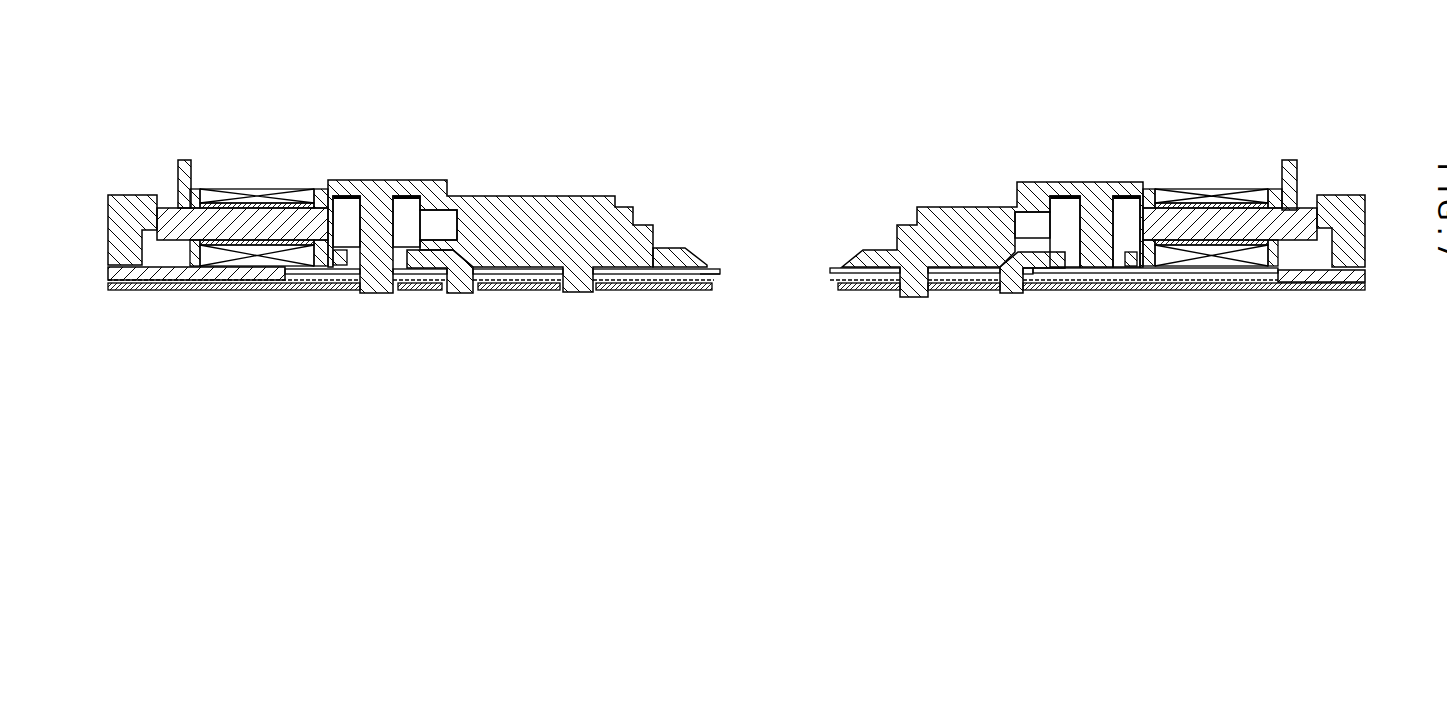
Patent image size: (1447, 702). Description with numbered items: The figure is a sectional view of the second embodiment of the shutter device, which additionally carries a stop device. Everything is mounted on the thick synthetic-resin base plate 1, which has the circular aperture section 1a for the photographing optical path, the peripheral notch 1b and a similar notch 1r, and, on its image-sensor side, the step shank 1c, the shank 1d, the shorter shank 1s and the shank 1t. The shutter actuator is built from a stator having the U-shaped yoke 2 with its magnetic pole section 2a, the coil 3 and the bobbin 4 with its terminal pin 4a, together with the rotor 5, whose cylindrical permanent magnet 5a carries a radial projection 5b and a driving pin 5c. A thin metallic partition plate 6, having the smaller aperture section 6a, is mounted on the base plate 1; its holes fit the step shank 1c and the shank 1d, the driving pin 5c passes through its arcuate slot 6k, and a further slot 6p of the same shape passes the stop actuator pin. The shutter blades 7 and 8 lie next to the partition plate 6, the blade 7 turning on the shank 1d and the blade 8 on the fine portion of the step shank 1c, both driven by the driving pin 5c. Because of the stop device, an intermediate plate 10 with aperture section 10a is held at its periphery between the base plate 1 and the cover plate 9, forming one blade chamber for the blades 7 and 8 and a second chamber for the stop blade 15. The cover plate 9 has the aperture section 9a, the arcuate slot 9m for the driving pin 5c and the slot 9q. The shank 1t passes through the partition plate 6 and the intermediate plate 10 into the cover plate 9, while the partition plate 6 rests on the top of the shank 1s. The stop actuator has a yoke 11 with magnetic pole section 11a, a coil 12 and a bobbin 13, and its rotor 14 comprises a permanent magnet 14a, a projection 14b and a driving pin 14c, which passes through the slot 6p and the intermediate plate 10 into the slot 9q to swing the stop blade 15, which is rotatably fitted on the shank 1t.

The base plate 1 is at (517, 207).
The aperture section 1a is at (843, 265).
The notch 1b is at (167, 198).
The step shank 1c is at (382, 262).
The shank 1d is at (578, 272).
The notch 1r is at (1303, 203).
The shank 1s is at (1093, 258).
The shank 1t is at (913, 282).
The yoke 2 is at (175, 228).
The magnetic pole section 2a is at (436, 220).
The coil 3 is at (251, 189).
The bobbin 4 is at (193, 250).
The terminal pin 4a is at (185, 160).
The rotor 5 is at (408, 193).
The permanent magnet 5a is at (348, 212).
The projection 5b is at (420, 281).
The driving pin 5c is at (456, 293).
The partition plate 6 is at (712, 265).
The aperture section 6a is at (720, 269).
The arcuate slot 6k is at (472, 262).
The slot 6p is at (995, 266).
The shutter blade 7 is at (645, 270).
The shutter blade 8 is at (667, 281).
The cover plate 9 is at (121, 291).
The aperture section 9a is at (712, 291).
The arcuate slot 9m is at (360, 294).
The slot 9q is at (993, 293).
The intermediate plate 10 is at (721, 274).
The aperture section 10a is at (824, 293).
The yoke 11 is at (1300, 268).
The magnetic pole section 11a is at (1030, 227).
The coil 12 is at (1210, 193).
The bobbin 13 is at (1283, 257).
The rotor 14 is at (1126, 208).
The permanent magnet 14a is at (1065, 212).
The projection 14b is at (1037, 263).
The driving pin 14c is at (1012, 293).
The stop blade 15 is at (1027, 277).